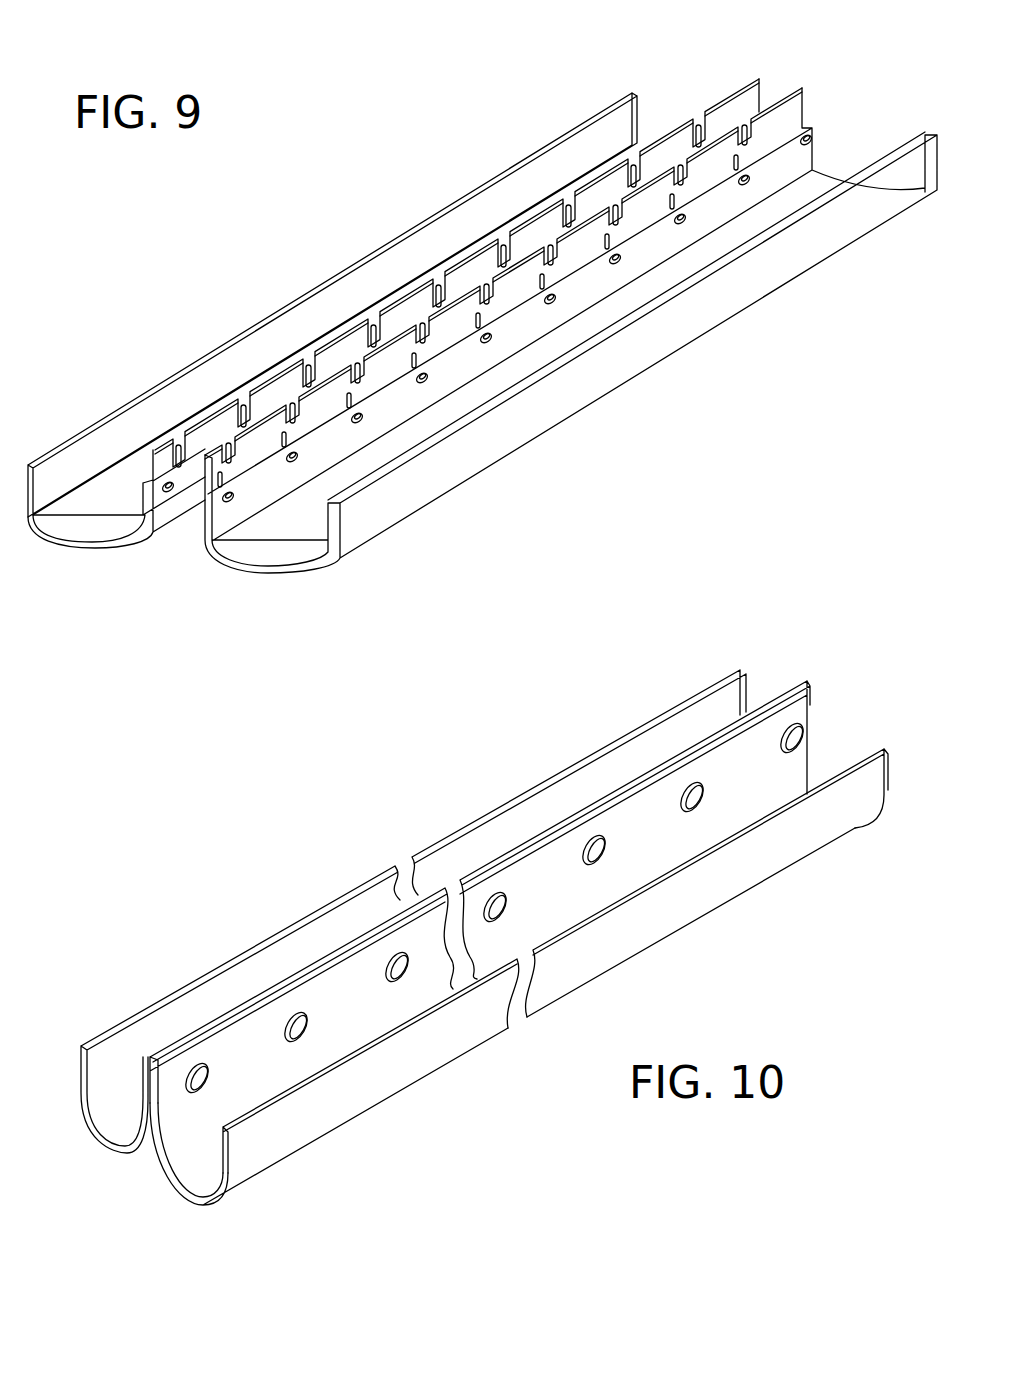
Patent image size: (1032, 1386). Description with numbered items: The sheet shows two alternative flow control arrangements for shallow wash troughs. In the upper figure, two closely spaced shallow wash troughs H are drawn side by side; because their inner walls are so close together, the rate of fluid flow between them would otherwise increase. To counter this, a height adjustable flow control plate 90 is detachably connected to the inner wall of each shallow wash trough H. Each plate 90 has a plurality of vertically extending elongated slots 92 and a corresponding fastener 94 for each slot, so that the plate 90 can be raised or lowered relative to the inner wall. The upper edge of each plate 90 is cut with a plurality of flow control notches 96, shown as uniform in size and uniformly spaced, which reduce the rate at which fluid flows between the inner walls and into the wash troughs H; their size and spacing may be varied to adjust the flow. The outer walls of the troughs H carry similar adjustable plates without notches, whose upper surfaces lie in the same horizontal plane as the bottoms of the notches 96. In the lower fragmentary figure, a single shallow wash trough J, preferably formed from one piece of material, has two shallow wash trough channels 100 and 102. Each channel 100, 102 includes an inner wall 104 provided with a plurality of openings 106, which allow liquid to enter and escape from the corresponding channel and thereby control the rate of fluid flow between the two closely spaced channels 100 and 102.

In FIG. 9, the flow control plate 90 is at (215, 425).
In FIG. 9, the elongated slots 92 is at (153, 445).
In FIG. 9, the fastener 94 is at (808, 140).
In FIG. 9, the flow control notches 96 is at (565, 195).
In FIG. 10, the shallow wash trough channel 100 is at (245, 968).
In FIG. 10, the shallow wash trough channel 102 is at (212, 1178).
In FIG. 10, the inner wall 104 is at (145, 1105).
In FIG. 10, the openings 106 is at (594, 850).
In FIG. 9, the shallow wash trough H is at (84, 548).
In FIG. 10, the shallow wash trough J is at (617, 700).